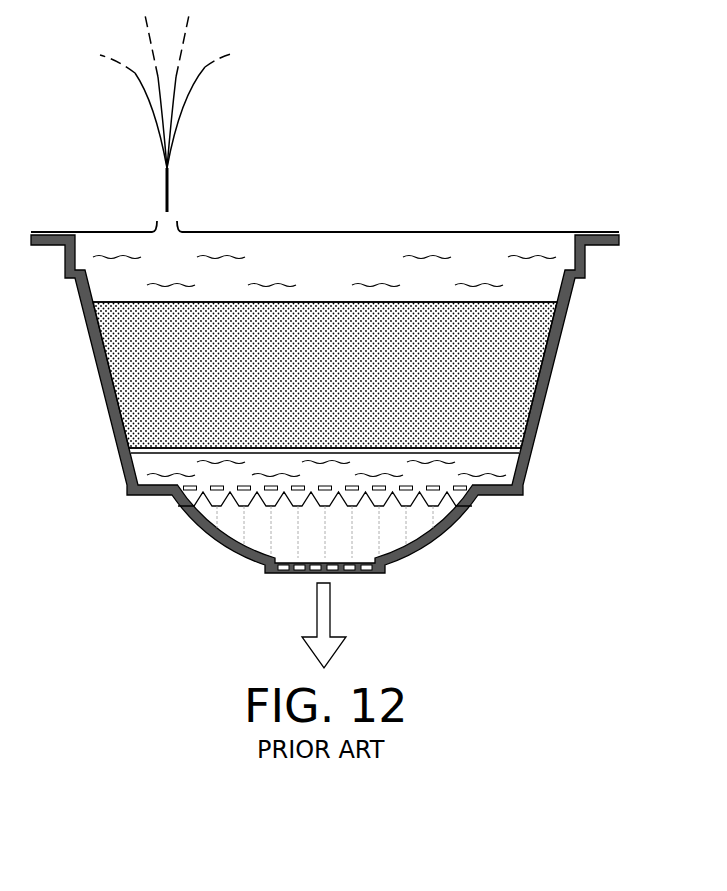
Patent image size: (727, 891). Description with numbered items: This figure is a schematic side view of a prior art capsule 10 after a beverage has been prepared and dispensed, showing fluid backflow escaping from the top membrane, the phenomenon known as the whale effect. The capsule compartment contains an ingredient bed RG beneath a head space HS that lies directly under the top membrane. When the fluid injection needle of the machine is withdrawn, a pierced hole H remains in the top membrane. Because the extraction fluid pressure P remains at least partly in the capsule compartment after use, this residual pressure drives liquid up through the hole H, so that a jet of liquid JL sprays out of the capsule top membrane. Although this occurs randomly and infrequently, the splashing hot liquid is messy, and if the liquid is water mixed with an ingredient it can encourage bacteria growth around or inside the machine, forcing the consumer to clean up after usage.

The capsule 10 is at (548, 378).
The hole H is at (170, 221).
The jet of liquid JL is at (141, 82).
The head space HS is at (483, 248).
The extraction fluid pressure P is at (331, 276).
The roast and ground coffee RG is at (345, 382).